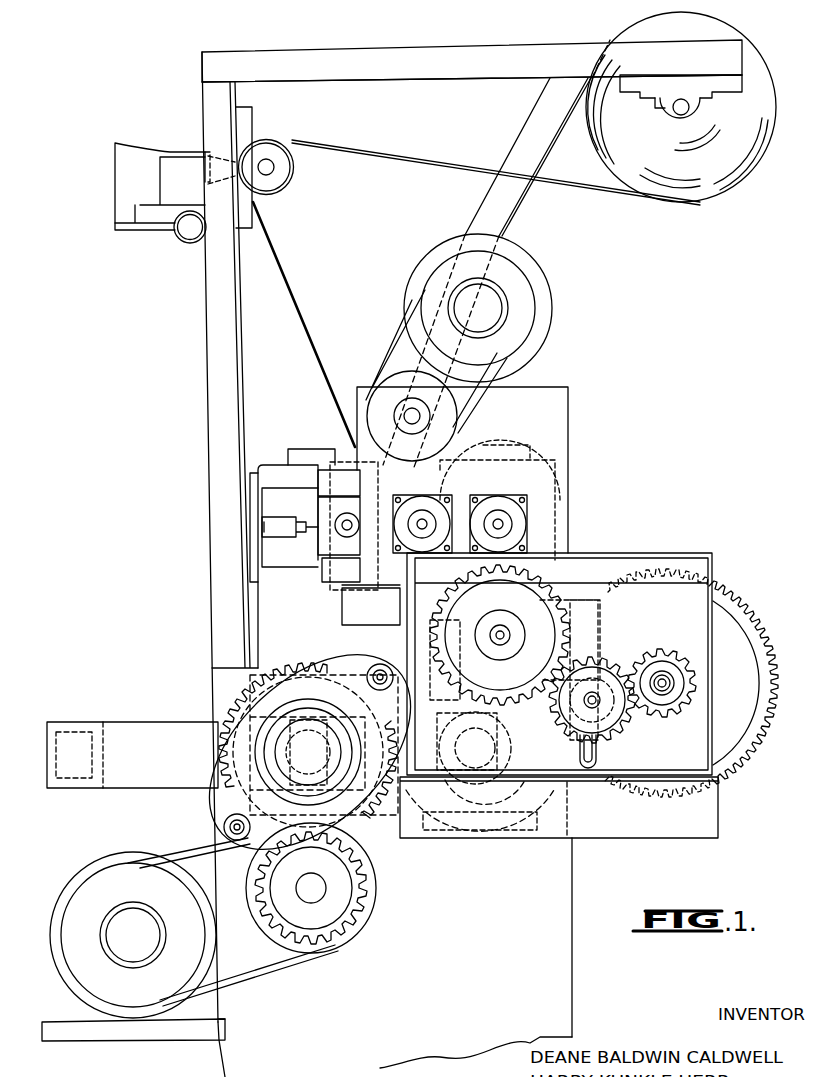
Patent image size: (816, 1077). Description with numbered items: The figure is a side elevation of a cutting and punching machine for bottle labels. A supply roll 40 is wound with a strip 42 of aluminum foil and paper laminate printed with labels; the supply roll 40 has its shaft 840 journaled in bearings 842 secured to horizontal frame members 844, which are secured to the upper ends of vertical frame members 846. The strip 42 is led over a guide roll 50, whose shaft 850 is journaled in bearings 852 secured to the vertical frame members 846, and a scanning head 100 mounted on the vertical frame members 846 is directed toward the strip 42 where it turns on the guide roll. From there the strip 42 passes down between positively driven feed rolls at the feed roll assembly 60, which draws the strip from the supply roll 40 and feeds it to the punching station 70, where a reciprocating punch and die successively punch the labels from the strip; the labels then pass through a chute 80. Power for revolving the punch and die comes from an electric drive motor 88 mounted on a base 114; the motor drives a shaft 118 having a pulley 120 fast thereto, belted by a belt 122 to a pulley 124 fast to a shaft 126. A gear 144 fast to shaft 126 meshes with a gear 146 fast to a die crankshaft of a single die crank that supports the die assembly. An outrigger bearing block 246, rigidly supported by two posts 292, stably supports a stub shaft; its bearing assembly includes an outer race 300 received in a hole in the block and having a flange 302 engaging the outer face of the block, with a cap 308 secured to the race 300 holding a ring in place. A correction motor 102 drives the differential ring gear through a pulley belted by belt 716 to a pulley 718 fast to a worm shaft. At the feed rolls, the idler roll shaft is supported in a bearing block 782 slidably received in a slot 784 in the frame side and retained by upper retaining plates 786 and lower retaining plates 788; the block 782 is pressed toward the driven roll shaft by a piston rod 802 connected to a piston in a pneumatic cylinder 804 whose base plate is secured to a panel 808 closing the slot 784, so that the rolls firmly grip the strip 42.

The supply roll 40 is at (716, 34).
The strip 42 is at (588, 190).
The guide roll 50 is at (294, 170).
The feed roll assembly 60 is at (327, 442).
The punching station 70 is at (326, 649).
The chute 80 is at (138, 722).
The electric drive motor 88 is at (72, 884).
The scanning head 100 is at (127, 128).
The correction motor 102 is at (553, 301).
The base 114 is at (78, 1035).
The shaft 118 is at (130, 950).
The pulley 120 is at (148, 993).
The belt 122 is at (258, 964).
The pulley 124 is at (335, 948).
The shaft 126 is at (313, 897).
The gear 144 is at (355, 905).
The gear 146 is at (368, 800).
The outrigger bearing block 246 is at (352, 660).
The posts 292 is at (381, 672).
The outer race 300 is at (266, 756).
The flange 302 is at (256, 742).
The cap 308 is at (280, 763).
The belt 716 is at (482, 392).
The pulley 718 is at (440, 438).
The bearing block 782 is at (328, 538).
The slot 784 is at (268, 503).
The upper retaining plates 786 is at (327, 498).
The lower retaining plates 788 is at (328, 573).
The piston rod 802 is at (312, 528).
The pneumatic cylinder 804 is at (272, 528).
The panel 808 is at (252, 498).
The shaft 840 is at (677, 110).
The bearings 842 is at (664, 96).
The horizontal frame members 844 is at (523, 62).
The vertical frame members 846 is at (220, 308).
The shaft 850 is at (270, 164).
The bearings 852 is at (246, 124).